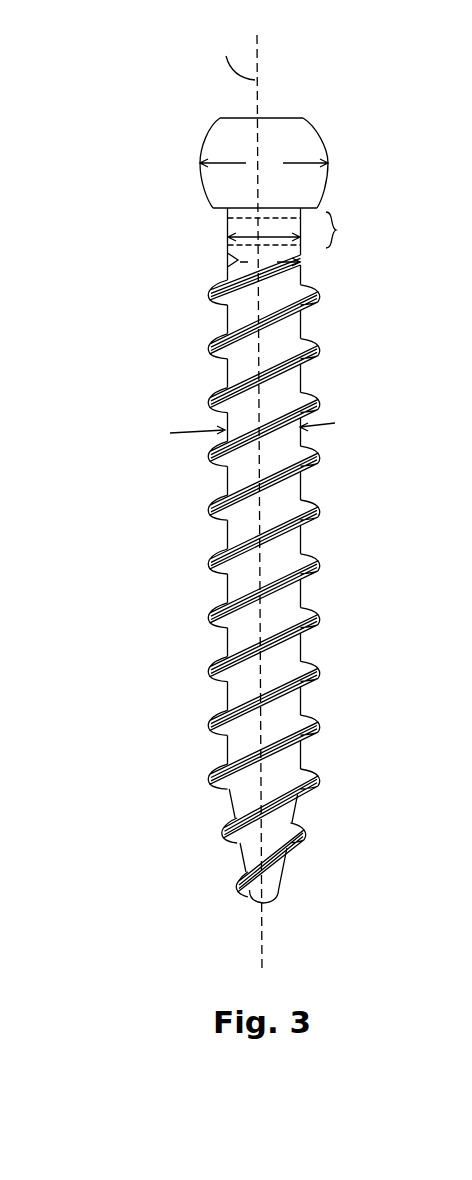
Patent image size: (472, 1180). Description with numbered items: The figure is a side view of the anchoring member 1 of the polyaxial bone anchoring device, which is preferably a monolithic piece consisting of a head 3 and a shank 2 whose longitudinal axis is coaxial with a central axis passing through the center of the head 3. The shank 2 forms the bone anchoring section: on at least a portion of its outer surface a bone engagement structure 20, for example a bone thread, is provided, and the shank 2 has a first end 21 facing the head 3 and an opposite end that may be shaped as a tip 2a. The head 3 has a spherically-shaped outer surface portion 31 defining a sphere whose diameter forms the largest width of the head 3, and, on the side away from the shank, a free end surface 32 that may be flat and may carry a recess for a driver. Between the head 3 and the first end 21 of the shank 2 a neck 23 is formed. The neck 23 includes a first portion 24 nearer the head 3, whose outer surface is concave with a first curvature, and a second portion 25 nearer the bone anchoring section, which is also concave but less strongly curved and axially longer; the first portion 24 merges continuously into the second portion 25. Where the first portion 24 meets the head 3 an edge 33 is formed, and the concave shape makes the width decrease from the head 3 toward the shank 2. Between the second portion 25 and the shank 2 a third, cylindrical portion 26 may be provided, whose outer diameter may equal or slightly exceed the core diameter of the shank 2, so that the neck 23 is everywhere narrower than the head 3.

The anchoring member 1 is at (163, 60).
The shank 2 is at (223, 635).
The screw tip 2a is at (258, 902).
The head 3 is at (206, 133).
The bone engagement structure 20 is at (207, 497).
The first end 21 is at (228, 252).
The neck 23 is at (350, 230).
The first portion 24 is at (226, 213).
The second portion 25 is at (232, 225).
The third, cylindrical portion 26 is at (290, 247).
The spherically-shaped outer surface portion 31 is at (200, 180).
The free end surface 32 is at (274, 117).
The edge 33 is at (320, 207).